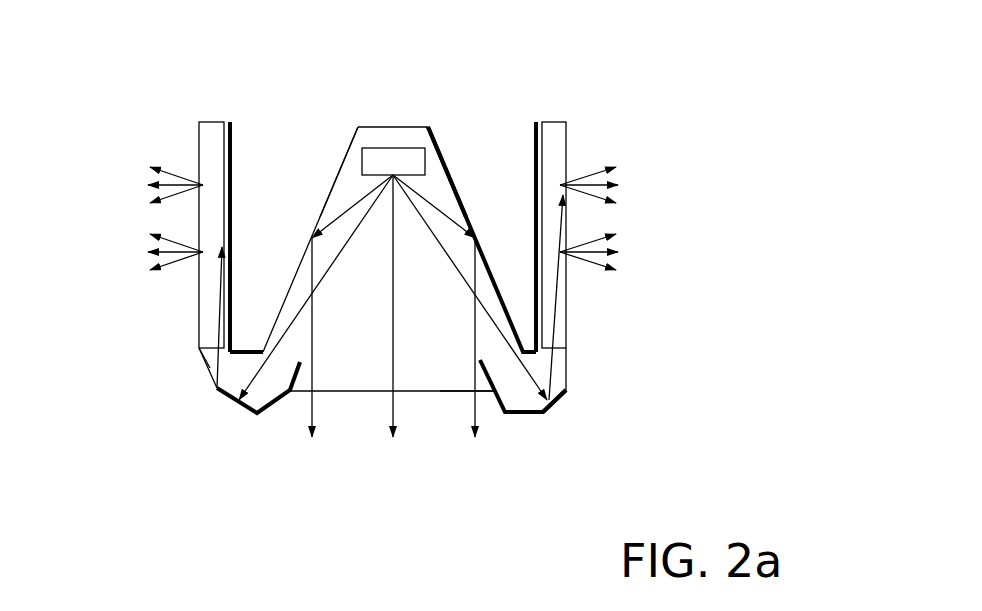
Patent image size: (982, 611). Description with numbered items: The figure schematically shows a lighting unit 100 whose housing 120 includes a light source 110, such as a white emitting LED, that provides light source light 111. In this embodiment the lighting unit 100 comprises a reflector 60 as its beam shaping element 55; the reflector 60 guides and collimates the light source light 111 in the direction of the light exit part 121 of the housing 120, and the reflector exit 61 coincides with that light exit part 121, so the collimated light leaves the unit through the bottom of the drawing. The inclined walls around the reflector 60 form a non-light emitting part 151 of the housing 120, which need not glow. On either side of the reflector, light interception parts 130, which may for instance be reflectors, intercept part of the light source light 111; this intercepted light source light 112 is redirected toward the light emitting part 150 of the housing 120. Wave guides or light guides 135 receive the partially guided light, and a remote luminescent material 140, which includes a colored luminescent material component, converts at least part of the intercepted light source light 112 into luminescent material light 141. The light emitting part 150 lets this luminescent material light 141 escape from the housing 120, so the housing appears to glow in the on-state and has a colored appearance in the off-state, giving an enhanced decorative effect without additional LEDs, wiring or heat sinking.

The lighting unit 100 is at (677, 75).
The reflector 60 is at (332, 148).
The reflector exit 61 is at (325, 393).
The beam shaping element 55 is at (297, 472).
The light source 110 is at (426, 160).
The light source light 111 is at (328, 268).
The intercepted light source light 112 is at (210, 368).
The housing 120 is at (221, 457).
The light exit part 121 is at (457, 393).
The light interception part 130 is at (515, 405).
The light guide 135 is at (558, 378).
The luminescent material 140 is at (553, 142).
The luminescent material light 141 is at (590, 262).
The light emitting part 150 is at (213, 137).
The non-light emitting part 151 is at (320, 217).